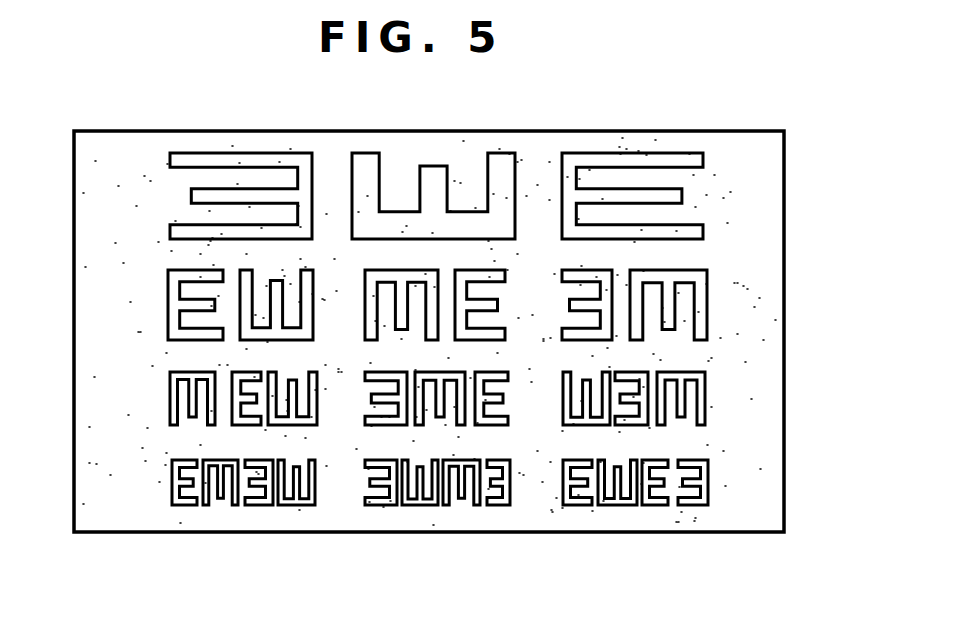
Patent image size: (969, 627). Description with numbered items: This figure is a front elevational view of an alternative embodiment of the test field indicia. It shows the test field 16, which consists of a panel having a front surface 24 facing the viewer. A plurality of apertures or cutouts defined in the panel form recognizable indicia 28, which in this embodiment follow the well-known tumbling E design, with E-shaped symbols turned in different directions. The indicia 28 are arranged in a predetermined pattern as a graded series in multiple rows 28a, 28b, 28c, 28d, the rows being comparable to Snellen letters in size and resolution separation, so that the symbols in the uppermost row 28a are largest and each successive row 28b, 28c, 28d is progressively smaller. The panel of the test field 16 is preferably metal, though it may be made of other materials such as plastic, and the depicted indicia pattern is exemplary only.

The test field 16 is at (697, 93).
The front surface 24 is at (92, 331).
The indicia 28 is at (272, 105).
The first row of indicia 28a is at (733, 200).
The second row of indicia 28b is at (720, 298).
The third row of indicia 28c is at (720, 396).
The fourth row of indicia 28d is at (727, 482).